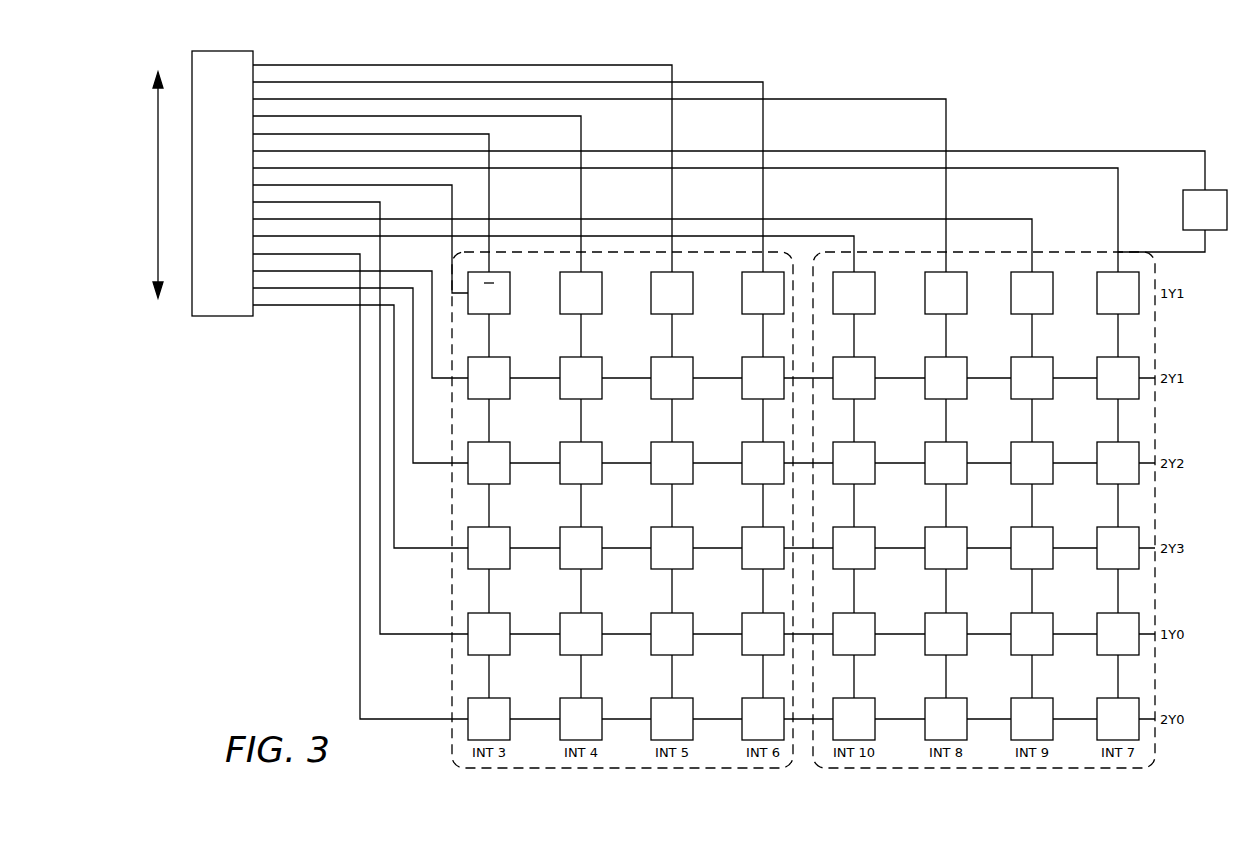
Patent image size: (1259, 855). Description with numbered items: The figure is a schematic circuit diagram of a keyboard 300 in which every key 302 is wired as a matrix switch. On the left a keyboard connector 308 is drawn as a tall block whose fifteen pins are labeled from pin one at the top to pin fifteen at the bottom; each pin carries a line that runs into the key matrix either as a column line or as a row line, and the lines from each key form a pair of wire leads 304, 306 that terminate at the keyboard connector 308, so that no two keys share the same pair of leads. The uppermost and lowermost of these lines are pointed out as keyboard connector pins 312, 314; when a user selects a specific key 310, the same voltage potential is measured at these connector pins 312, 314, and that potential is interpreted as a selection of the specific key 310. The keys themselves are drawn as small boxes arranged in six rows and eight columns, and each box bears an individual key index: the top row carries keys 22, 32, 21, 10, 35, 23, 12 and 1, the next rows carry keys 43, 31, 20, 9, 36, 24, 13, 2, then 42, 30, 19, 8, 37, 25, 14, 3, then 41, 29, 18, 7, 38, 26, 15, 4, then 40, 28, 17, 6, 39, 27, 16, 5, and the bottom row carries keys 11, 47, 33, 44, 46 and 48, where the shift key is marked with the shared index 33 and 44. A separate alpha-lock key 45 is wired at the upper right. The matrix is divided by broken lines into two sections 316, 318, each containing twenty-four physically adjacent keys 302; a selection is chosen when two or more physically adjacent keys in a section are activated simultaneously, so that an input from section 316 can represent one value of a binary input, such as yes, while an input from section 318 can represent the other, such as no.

The keyboard 300 is at (807, 395).
The key 302 is at (779, 284).
The wire lead 304 is at (451, 207).
The wire lead 306 is at (490, 207).
The keyboard connector 308 is at (225, 320).
The specific key 310 is at (690, 553).
The keyboard connector pin 312 is at (255, 62).
The keyboard connector pin 314 is at (255, 312).
The section 316 is at (452, 745).
The section 318 is at (1155, 745).
The alpha lock key 45 is at (1205, 201).
The key 1 is at (1118, 285).
The key 2 is at (1118, 370).
The key 3 is at (1118, 455).
The key 4 is at (1118, 540).
The key 5 is at (1118, 626).
The key 6 is at (763, 626).
The key 7 is at (763, 540).
The key 8 is at (763, 455).
The key 9 is at (763, 370).
The key 0 10 is at (763, 285).
The key plus/equals 11 is at (489, 711).
The key Q 12 is at (1032, 285).
The key W 13 is at (1032, 370).
The key E 14 is at (1032, 455).
The key R 15 is at (1032, 540).
The key T 16 is at (1032, 626).
The key Y 17 is at (672, 626).
The key U 18 is at (705, 578).
The key I 19 is at (672, 455).
The key O 20 is at (672, 370).
The key P 21 is at (672, 285).
The key slash 22 is at (489, 285).
The key A 23 is at (946, 285).
The key S 24 is at (946, 370).
The key D 25 is at (946, 455).
The key F 26 is at (946, 540).
The key G 27 is at (946, 626).
The key H 28 is at (581, 626).
The key J 29 is at (581, 540).
The key K 30 is at (581, 455).
The key L 31 is at (581, 370).
The key colon/semicolon 32 is at (581, 285).
The key ENT 33 is at (672, 711).
The key Z 35 is at (854, 285).
The key X 36 is at (854, 370).
The key C 37 is at (854, 455).
The key V 38 is at (854, 540).
The key B 39 is at (854, 626).
The key N 40 is at (489, 626).
The key M 41 is at (489, 540).
The key less-than/comma 42 is at (489, 455).
The key greater-than/period 43 is at (489, 370).
The key SHIFT 2 44 is at (956, 711).
The key CTRL 46 is at (1032, 711).
The key SPC 47 is at (581, 711).
The key FNCT 48 is at (1118, 711).